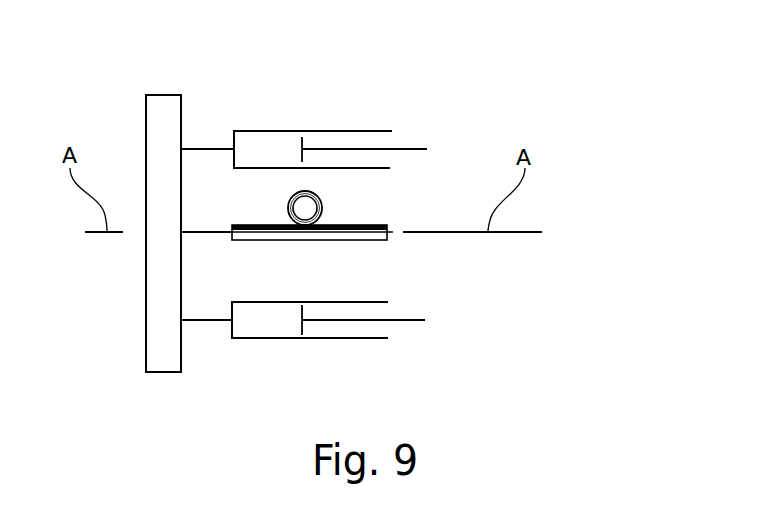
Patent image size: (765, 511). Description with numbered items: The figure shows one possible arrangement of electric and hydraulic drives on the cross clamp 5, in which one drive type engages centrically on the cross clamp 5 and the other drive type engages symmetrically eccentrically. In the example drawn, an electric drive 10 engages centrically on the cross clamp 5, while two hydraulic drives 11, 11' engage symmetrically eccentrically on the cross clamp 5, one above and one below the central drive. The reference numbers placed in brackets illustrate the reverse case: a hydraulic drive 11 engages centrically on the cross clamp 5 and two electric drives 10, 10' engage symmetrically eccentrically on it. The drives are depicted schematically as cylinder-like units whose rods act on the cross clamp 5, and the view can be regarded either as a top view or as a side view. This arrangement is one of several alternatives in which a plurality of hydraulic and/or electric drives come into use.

The cross clamp 5 is at (163, 122).
The hydraulic drive 11 is at (325, 143).
The electric drive 10 is at (325, 143).
The hydraulic drive 11' is at (309, 365).
The electric drive 10' is at (309, 365).